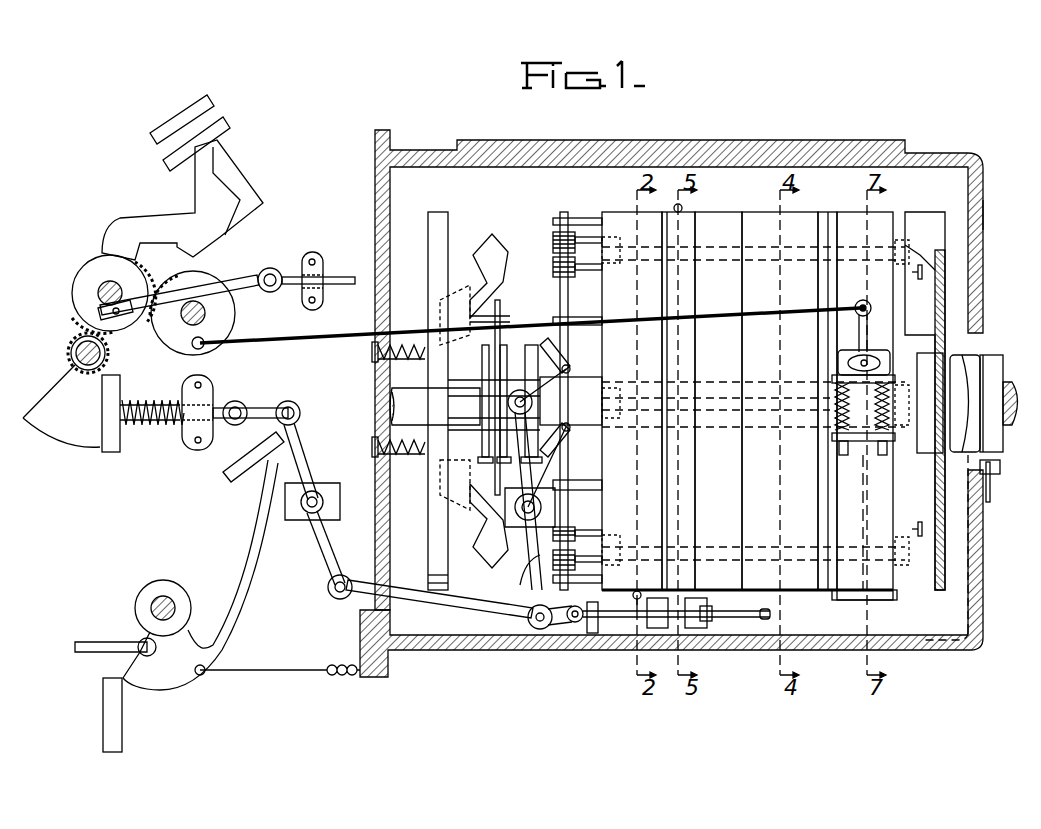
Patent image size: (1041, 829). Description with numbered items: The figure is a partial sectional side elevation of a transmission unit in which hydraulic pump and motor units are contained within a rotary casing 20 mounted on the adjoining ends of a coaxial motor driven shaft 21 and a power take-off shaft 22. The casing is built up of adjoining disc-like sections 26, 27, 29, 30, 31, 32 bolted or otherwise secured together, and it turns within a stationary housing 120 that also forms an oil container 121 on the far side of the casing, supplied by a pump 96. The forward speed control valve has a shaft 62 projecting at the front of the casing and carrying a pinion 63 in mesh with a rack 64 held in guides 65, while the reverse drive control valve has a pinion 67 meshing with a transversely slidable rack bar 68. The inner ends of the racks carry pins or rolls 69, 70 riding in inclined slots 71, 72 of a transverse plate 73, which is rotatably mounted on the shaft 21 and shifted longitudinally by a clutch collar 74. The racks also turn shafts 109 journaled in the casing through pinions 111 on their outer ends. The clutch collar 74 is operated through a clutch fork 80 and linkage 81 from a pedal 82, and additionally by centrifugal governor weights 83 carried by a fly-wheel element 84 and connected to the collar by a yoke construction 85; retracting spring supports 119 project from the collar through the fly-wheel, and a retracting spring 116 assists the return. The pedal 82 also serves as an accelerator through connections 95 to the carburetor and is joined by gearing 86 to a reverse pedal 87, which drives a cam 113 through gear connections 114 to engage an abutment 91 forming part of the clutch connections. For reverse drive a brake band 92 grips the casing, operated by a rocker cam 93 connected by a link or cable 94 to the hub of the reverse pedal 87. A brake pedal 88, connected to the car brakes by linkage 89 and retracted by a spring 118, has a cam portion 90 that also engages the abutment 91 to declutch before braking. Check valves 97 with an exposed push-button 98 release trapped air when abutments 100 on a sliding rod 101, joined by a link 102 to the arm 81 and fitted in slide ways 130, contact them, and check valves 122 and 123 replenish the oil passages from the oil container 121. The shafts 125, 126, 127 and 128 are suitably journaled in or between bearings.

The casing 20 is at (970, 302).
The motor driven shaft 21 is at (392, 395).
The power take-off shaft 22 is at (1012, 430).
The disc-like casing section 26 is at (630, 217).
The disc-like casing section 27 is at (658, 217).
The disc-like casing section 29 is at (718, 217).
The disc-like casing section 30 is at (765, 220).
The disc-like casing section 31 is at (825, 217).
The disc-like casing section 32 is at (900, 215).
The valve shaft 62 is at (588, 237).
The pinion 63 is at (553, 237).
The rack 64 is at (568, 295).
The guides 65 is at (556, 217).
The pinion 67 is at (540, 560).
The rack bar 68 is at (567, 508).
The pin or roll 69 is at (577, 330).
The pin or roll 70 is at (577, 475).
The inclined slot 71 is at (568, 362).
The inclined slot 72 is at (570, 437).
The transverse plate 73 is at (571, 401).
The clutch collar 74 is at (482, 370).
The clutch fork 80 is at (528, 470).
The linkage 81 is at (255, 405).
The pedal 82 is at (197, 136).
The governor weights 83 is at (494, 244).
The fly-wheel element 84 is at (428, 250).
The yoke construction 85 is at (505, 307).
The gearing 86 is at (153, 280).
The reverse pedal 87 is at (200, 107).
The brake pedal 88 is at (226, 473).
The linkage 89 is at (95, 641).
The cam portion 90 is at (164, 656).
The abutment 91 is at (120, 447).
The brake band 92 is at (885, 600).
The rocker cam 93 is at (870, 360).
The link or cable 94 is at (300, 340).
The connections 95 is at (250, 278).
The pump 96 is at (990, 502).
The check valves 97 is at (635, 600).
The push-button 98 is at (677, 204).
The abutments 100 is at (655, 615).
The sliding rod 101 is at (770, 614).
The link 102 is at (570, 624).
The shafts 109 is at (618, 215).
The pinions 111 is at (553, 262).
The cam 113 is at (61, 406).
The gear connections 114 is at (76, 335).
The retracting spring 116 is at (166, 412).
The spring 118 is at (288, 668).
The retracting spring supports 119 is at (372, 352).
The stationary housing 120 is at (983, 215).
The oil container 121 is at (938, 215).
The check valve 122 is at (922, 272).
The check valve 123 is at (922, 529).
The shaft 125 is at (98, 300).
The shaft 126 is at (210, 315).
The shaft 127 is at (71, 358).
The shaft 128 is at (175, 608).
The slide ways 130 is at (592, 633).